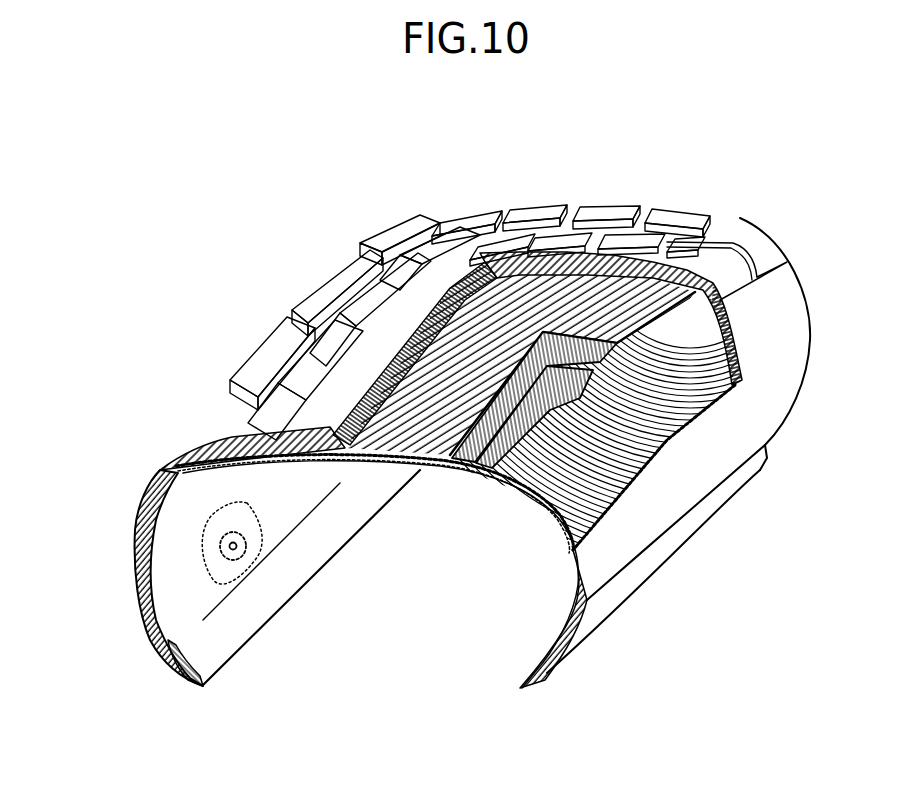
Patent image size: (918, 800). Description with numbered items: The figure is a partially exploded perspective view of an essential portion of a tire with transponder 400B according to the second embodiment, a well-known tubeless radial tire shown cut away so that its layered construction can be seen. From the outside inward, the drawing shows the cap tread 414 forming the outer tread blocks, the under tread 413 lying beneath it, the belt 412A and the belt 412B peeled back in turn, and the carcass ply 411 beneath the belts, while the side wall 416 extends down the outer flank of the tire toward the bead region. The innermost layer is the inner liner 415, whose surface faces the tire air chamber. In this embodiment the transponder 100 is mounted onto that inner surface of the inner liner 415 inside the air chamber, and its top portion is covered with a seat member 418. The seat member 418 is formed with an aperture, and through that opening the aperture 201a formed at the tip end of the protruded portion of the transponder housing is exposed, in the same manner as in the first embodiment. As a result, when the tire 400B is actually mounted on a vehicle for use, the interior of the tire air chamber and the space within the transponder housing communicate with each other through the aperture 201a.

The tire with transponder 400B is at (466, 186).
The under tread 413 is at (600, 268).
The cap tread 414 is at (323, 387).
The carcass ply 411 is at (147, 490).
The belt 412A is at (653, 435).
The belt 412B is at (613, 507).
The side wall 416 is at (594, 578).
The inner liner 415 is at (207, 623).
The transponder 100 is at (253, 553).
The aperture 201a is at (238, 545).
The seat member 418 is at (260, 577).